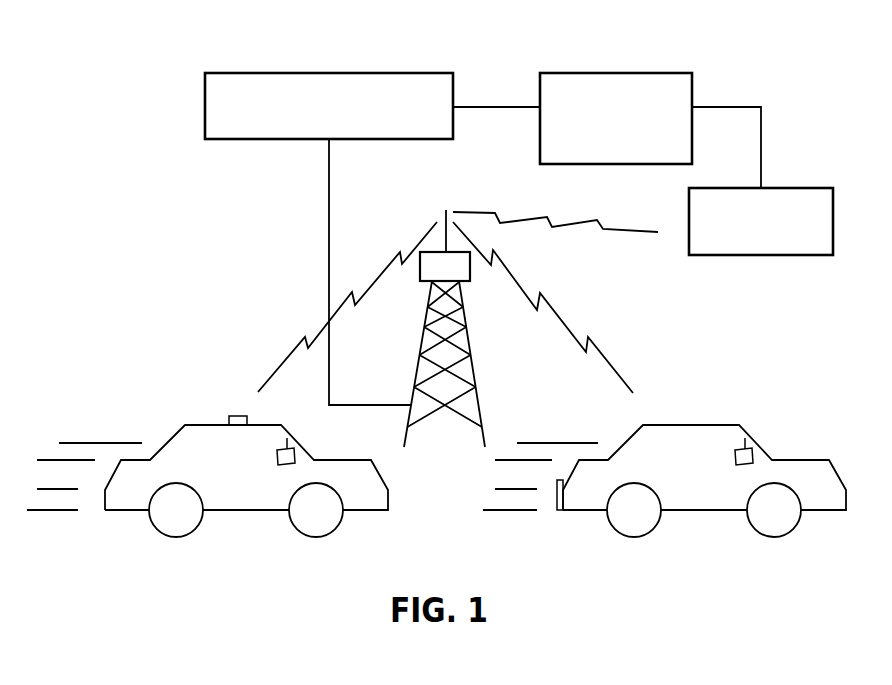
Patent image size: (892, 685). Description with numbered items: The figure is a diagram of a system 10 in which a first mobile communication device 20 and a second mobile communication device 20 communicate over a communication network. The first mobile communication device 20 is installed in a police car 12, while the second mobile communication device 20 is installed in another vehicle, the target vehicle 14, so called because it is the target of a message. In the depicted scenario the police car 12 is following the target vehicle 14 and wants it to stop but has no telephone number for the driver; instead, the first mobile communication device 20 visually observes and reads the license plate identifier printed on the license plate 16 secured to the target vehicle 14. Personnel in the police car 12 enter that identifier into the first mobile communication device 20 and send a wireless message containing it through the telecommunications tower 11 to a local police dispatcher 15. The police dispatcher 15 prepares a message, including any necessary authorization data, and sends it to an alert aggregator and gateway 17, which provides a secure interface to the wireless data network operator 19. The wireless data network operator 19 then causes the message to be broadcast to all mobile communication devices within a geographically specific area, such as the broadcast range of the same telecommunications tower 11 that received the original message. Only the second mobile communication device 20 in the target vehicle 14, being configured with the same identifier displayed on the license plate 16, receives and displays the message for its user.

The system 10 is at (158, 278).
The telecommunications tower 11 is at (462, 338).
The police car 12 is at (175, 442).
The target vehicle 14 is at (633, 443).
The local police dispatcher 15 is at (817, 188).
The license plate 16 is at (560, 512).
The alert aggregator and gateway 17 is at (570, 73).
The wireless data network operator 19 is at (235, 73).
The mobile communication device 20 is at (300, 444).